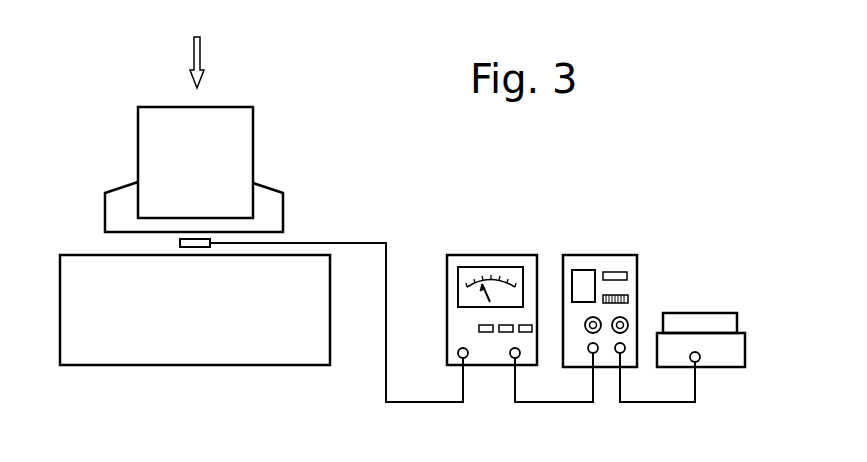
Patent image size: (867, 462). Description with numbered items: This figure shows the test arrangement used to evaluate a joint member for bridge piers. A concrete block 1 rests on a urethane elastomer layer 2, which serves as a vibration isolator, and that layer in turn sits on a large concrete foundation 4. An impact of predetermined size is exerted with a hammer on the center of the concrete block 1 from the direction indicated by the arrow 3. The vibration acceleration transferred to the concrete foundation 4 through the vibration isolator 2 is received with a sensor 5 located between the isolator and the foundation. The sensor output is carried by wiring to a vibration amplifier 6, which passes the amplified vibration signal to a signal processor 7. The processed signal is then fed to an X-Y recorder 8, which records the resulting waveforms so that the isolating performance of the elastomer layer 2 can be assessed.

The concrete block 1 is at (142, 133).
The urethane elastomer layer 2 is at (117, 193).
The arrow 3 is at (201, 51).
The concrete foundation 4 is at (120, 357).
The pressure sensor 5 is at (193, 247).
The vibration amplifier 6 is at (480, 254).
The signal processor 7 is at (600, 255).
The X-Y recorder 8 is at (713, 313).